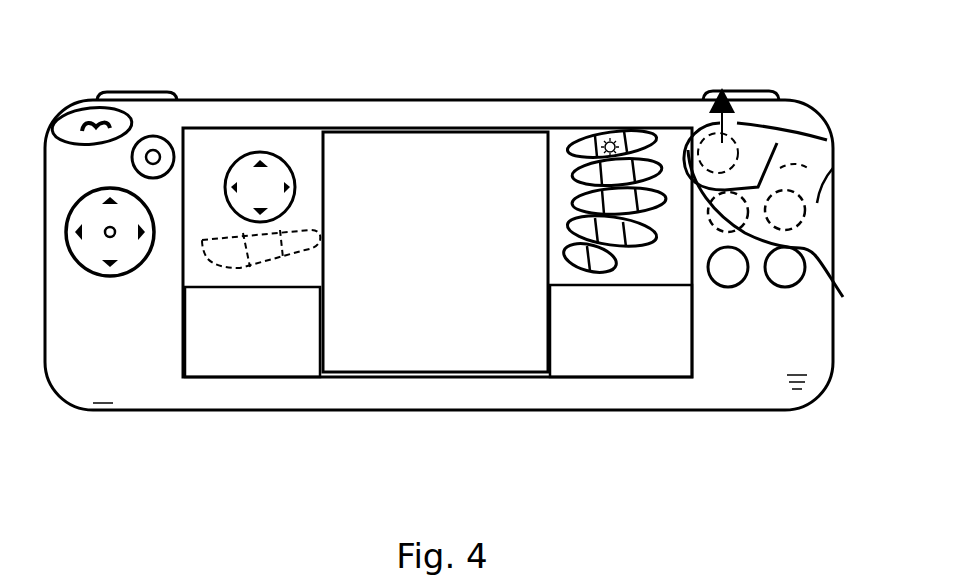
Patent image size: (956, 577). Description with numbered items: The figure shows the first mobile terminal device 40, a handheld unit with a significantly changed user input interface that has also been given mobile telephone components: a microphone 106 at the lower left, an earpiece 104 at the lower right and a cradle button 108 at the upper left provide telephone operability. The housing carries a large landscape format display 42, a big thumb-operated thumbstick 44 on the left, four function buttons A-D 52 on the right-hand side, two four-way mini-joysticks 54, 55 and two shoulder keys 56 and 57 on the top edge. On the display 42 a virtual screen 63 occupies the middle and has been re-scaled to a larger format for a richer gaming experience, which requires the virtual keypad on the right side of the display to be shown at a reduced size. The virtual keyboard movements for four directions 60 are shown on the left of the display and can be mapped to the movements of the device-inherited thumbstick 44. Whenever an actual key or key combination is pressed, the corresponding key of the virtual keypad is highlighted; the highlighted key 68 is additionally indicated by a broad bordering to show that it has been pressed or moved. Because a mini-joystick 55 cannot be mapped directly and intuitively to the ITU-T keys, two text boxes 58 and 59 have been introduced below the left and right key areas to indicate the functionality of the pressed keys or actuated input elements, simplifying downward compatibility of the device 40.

The mobile terminal device 40 is at (430, 406).
The landscape format display 42 is at (185, 306).
The thumbstick 44 is at (95, 256).
The function buttons A-D 52 is at (783, 288).
The 4-way mini-joystick 54 is at (158, 138).
The 4-way mini-joystick 55 is at (718, 140).
The shoulder key 56 is at (130, 92).
The shoulder key 57 is at (737, 91).
The text box 58 is at (268, 365).
The text box 59 is at (528, 360).
The virtual keyboard movements for four directions 60 is at (258, 176).
The virtual screen 63 is at (407, 175).
The highlighted key 68 is at (610, 142).
The earpiece 104 is at (796, 389).
The microphone 106 is at (103, 403).
The cradle button 108 is at (80, 118).